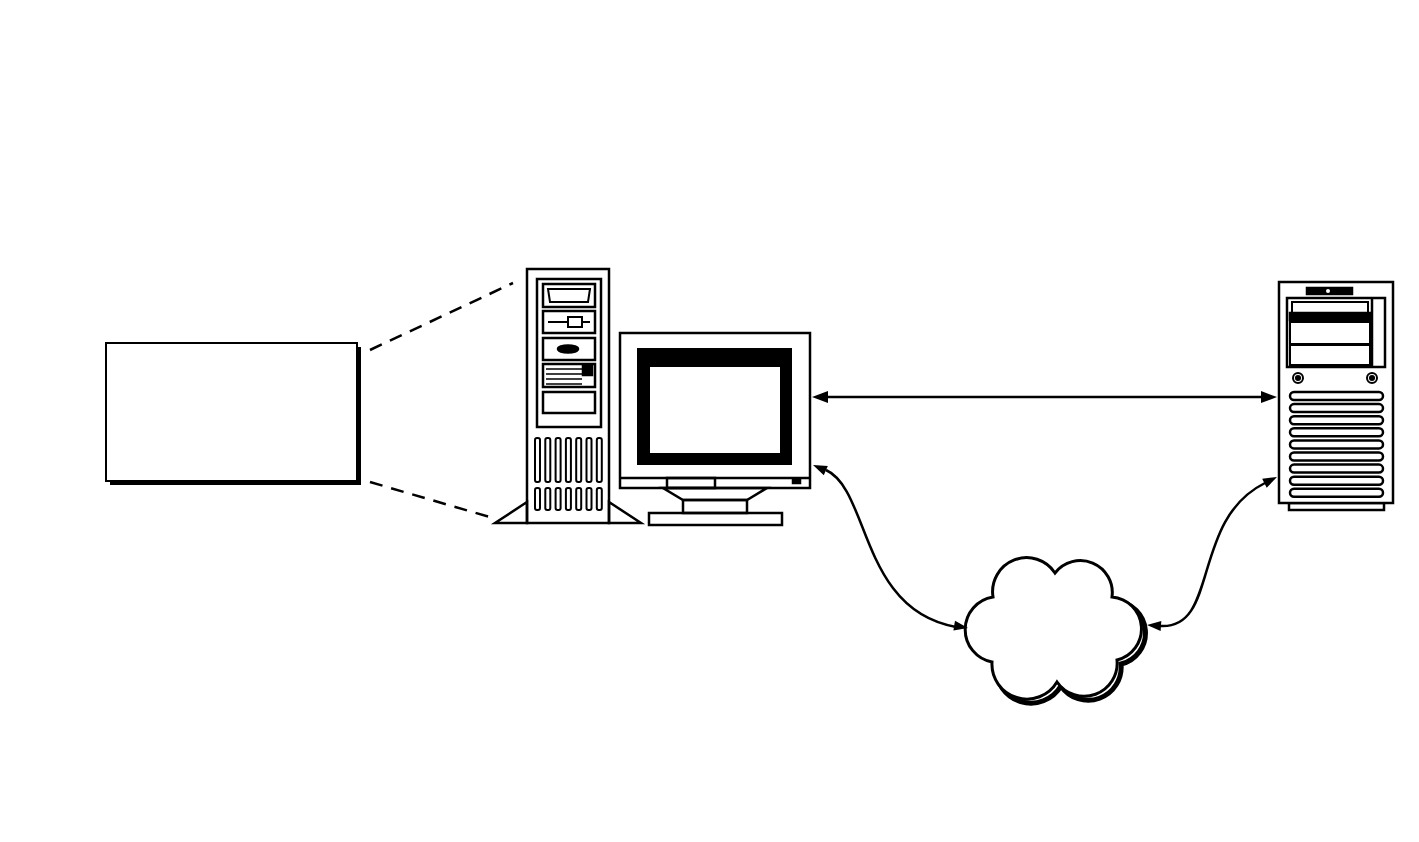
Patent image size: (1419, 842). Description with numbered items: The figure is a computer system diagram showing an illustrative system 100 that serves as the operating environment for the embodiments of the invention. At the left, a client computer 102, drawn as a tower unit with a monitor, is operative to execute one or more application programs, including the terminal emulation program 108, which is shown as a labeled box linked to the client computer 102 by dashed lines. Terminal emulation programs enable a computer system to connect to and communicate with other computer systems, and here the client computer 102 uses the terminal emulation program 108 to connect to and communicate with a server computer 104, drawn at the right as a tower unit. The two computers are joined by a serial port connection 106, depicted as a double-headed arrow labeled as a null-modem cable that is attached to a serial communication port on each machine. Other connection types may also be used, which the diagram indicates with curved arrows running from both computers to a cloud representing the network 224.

The system 100 is at (942, 137).
The client computer 102 is at (728, 303).
The server computer 104 is at (1363, 270).
The serial port connection 106 is at (1028, 387).
The terminal emulation program 108 is at (229, 516).
The network 224 is at (1080, 680).